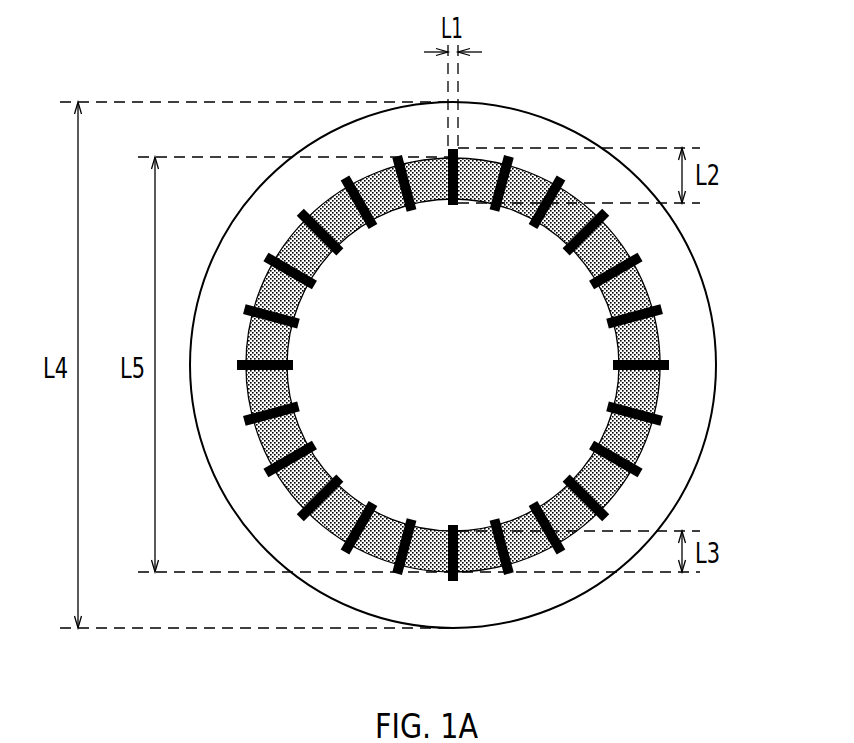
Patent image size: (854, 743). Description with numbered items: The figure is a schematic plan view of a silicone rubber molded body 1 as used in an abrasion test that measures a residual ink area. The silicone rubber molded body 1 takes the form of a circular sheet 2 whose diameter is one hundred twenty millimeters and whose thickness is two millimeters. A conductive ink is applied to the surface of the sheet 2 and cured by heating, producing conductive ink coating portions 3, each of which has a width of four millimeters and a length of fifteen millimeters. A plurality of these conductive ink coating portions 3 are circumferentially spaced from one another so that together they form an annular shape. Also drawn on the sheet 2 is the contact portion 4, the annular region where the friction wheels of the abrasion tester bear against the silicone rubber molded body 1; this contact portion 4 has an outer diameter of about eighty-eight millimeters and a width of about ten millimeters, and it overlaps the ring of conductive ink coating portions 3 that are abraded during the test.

The silicone rubber molded body 1 is at (118, 66).
The sheet 2 is at (667, 280).
The conductive ink coating portion 3 is at (667, 360).
The contact portion 4 is at (647, 390).